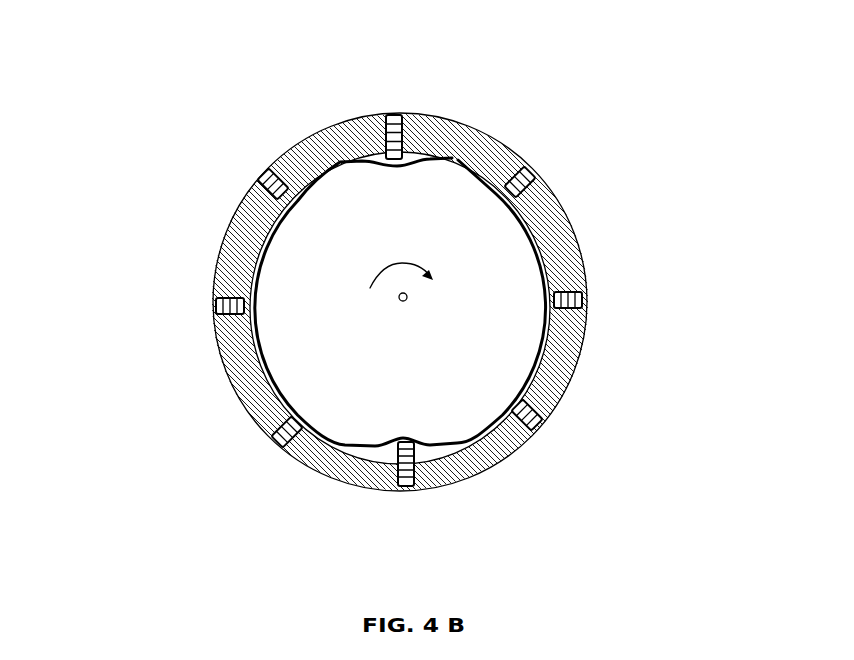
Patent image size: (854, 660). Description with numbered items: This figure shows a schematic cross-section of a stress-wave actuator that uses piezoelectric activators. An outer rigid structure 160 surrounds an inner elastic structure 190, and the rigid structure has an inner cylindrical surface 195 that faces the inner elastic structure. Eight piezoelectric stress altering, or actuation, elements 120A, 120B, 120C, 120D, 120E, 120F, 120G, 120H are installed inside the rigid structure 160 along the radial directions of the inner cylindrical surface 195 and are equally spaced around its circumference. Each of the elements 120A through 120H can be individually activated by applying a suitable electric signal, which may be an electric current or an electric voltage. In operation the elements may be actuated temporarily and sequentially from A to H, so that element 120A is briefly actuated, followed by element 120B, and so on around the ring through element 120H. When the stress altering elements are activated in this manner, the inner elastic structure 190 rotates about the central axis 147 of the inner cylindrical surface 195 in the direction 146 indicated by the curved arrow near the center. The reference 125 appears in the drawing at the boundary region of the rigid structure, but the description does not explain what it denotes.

The piezoelectric element 120A is at (430, 480).
The piezoelectric element 120B is at (268, 438).
The piezoelectric element 120C is at (212, 307).
The piezoelectric element 120D is at (256, 183).
The piezoelectric element 120E is at (358, 121).
The piezoelectric element 120F is at (515, 158).
The piezoelectric element 120G is at (583, 311).
The piezoelectric element 120H is at (543, 428).
The inner surface 125 is at (549, 354).
The direction 146 is at (400, 265).
The central axis 147 is at (403, 302).
The rigid structure 160 is at (555, 195).
The inner elastic structure 190 is at (548, 253).
The inner cylindrical surface 195 is at (449, 117).